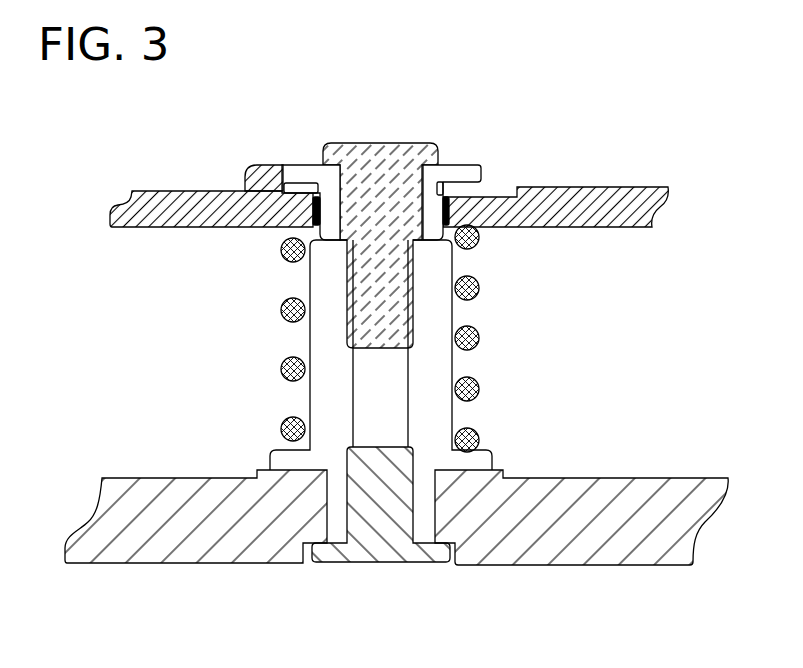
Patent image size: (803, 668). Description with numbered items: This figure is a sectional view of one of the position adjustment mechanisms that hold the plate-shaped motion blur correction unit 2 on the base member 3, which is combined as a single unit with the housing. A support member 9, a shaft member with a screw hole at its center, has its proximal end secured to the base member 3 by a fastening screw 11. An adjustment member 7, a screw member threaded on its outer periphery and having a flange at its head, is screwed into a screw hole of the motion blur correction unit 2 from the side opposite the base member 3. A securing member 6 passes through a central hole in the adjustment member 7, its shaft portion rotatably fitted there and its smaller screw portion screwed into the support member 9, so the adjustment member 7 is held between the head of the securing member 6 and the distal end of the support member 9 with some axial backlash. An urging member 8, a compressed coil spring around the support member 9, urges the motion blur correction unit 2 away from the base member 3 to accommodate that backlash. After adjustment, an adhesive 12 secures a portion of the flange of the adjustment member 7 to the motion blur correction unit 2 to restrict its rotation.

The motion blur correction unit 2 is at (597, 192).
The base member 3 is at (598, 490).
The securing member 6 is at (383, 152).
The adjustment member 7 is at (455, 165).
The urging member 8 is at (282, 312).
The support member 9 is at (440, 368).
The fastening screw 11 is at (372, 566).
The adhesive 12 is at (272, 171).